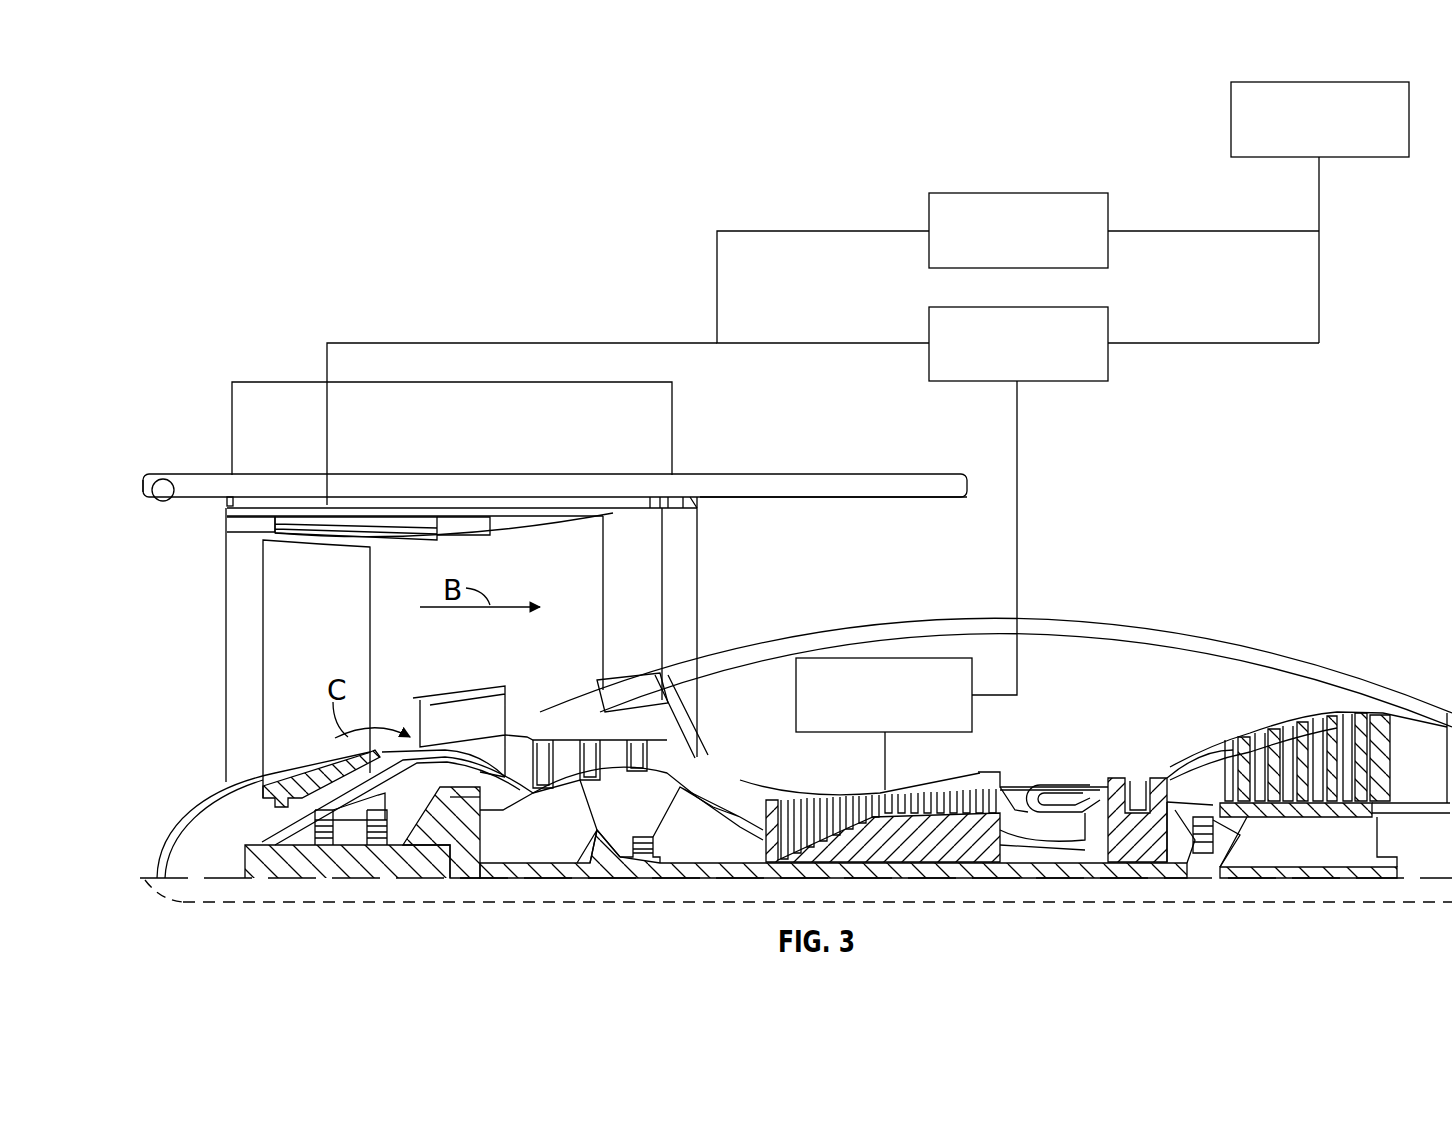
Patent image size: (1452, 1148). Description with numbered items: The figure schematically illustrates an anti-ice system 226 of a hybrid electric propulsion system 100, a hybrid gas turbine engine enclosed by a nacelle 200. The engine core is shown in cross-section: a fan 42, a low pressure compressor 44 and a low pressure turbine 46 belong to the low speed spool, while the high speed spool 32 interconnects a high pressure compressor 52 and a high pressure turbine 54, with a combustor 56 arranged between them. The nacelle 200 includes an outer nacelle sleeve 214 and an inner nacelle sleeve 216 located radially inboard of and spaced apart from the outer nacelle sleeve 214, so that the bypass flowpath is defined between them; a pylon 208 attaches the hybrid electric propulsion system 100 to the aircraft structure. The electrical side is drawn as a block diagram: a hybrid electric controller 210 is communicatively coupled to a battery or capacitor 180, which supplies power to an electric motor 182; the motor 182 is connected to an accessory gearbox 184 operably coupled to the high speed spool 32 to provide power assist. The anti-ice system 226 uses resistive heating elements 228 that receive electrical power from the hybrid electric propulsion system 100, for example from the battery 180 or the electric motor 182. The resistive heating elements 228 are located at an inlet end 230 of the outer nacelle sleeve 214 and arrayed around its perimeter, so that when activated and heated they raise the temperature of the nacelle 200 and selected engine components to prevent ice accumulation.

The hybrid electric propulsion system 100 is at (272, 910).
The hybrid electric controller 210 is at (1300, 82).
The battery or capacitor 180 is at (999, 193).
The electric motor 182 is at (999, 307).
The accessory gearbox 184 is at (862, 658).
The anti-ice system 226 is at (308, 300).
The pylon 208 is at (507, 398).
The nacelle 200 is at (217, 473).
The outer nacelle sleeve 214 is at (818, 485).
The inlet end 230 is at (143, 485).
The resistive heating elements 228 is at (163, 501).
The fan 42 is at (341, 640).
The low pressure compressor 44 is at (612, 753).
The low pressure turbine 46 is at (1305, 735).
The high pressure compressor 52 is at (895, 840).
The high speed spool 32 is at (993, 797).
The combustor 56 is at (1073, 797).
The high pressure turbine 54 is at (1140, 772).
The inner nacelle sleeve 216 is at (1060, 618).